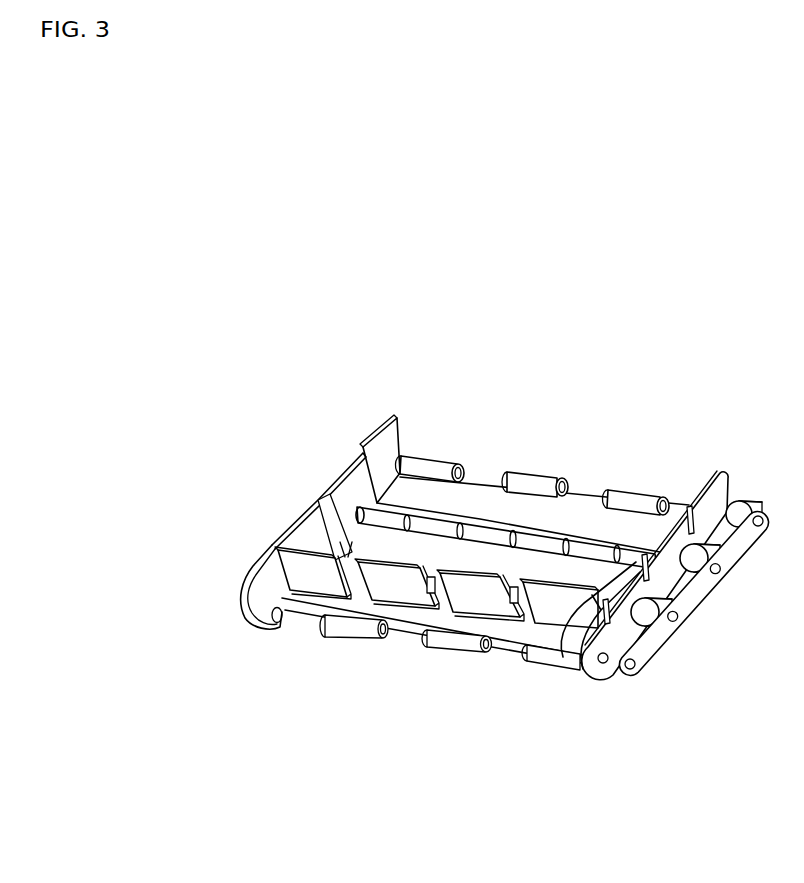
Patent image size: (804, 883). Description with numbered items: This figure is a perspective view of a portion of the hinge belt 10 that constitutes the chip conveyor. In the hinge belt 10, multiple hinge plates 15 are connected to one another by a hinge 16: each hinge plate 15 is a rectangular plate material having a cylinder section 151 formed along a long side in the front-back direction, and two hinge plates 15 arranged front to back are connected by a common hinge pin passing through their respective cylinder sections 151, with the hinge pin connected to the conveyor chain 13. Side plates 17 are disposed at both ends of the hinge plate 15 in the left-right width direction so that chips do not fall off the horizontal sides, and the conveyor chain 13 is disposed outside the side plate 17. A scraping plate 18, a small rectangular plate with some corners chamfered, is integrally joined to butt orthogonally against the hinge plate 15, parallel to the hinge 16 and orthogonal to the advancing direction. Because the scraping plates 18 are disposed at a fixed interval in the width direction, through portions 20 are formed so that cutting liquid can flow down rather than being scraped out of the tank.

The hinge belt 10 is at (548, 340).
The conveyor chain 13 is at (687, 603).
The hinge plate 15 is at (583, 530).
The cylinder section 151 is at (532, 485).
The hinge 16 is at (425, 520).
The side plate 17 is at (375, 451).
The scraping plate 18 is at (393, 582).
The through portion 20 is at (318, 528).